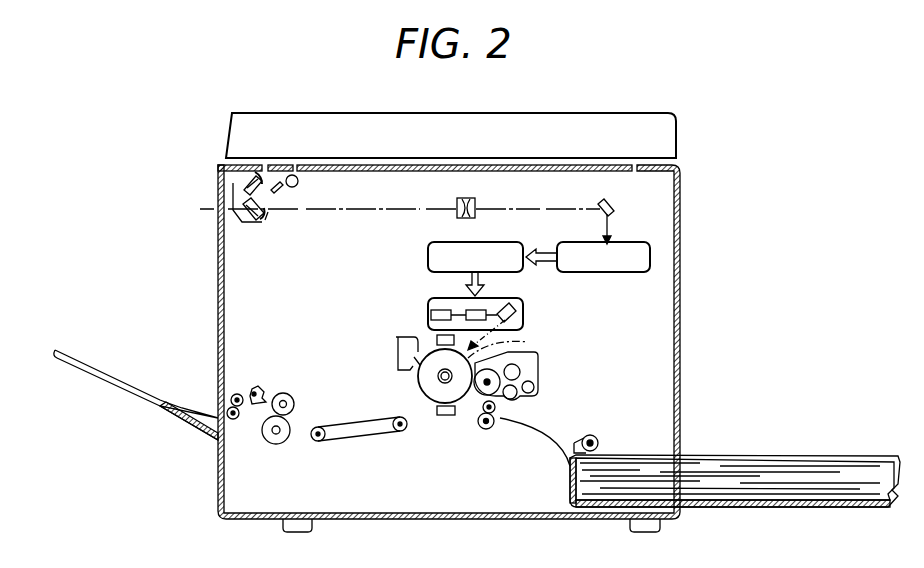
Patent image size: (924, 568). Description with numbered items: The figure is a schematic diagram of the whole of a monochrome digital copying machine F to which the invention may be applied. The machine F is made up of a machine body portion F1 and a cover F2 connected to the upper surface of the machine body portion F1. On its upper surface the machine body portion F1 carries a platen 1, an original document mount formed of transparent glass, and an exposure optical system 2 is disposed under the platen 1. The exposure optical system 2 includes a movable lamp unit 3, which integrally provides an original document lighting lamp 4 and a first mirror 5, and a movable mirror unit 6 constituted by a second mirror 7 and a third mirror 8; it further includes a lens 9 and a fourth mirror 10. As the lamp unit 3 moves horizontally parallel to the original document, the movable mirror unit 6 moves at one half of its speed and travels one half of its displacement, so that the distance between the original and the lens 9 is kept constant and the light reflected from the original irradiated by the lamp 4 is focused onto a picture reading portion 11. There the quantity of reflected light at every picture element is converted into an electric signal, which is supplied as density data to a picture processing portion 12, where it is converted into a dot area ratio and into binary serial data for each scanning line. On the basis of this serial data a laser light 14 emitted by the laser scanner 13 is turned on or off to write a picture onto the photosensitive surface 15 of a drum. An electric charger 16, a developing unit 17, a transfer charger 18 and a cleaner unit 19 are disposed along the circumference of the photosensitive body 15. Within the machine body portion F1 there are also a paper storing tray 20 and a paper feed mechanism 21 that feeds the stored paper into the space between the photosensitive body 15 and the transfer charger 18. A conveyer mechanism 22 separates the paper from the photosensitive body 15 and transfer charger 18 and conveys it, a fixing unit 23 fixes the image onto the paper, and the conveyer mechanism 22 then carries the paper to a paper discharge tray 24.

The monochrome digital copying machine F is at (698, 114).
The machine body portion F1 is at (682, 200).
The cover F2 is at (614, 112).
The platen 1 is at (388, 170).
The exposure optical system 2 is at (265, 228).
The lamp unit 3 is at (336, 216).
The original document lighting lamp 4 is at (295, 190).
The first mirror 5 is at (278, 196).
The movable mirror unit 6 is at (186, 173).
The second mirror 7 is at (232, 178).
The third mirror 8 is at (232, 209).
The lens 9 is at (476, 200).
The fourth mirror 10 is at (612, 202).
The picture reading portion 11 is at (610, 273).
The picture processing portion 12 is at (428, 257).
The laser scanner 13 is at (526, 308).
The laser light 14 is at (510, 345).
The photosensitive surface 15 is at (418, 382).
The electric charger 16 is at (438, 338).
The developing unit 17 is at (540, 370).
The transfer charger 18 is at (446, 415).
The cleaner unit 19 is at (396, 345).
The paper storing tray 20 is at (822, 456).
The paper feed mechanism 21 is at (494, 428).
The conveyer mechanism 22 is at (364, 430).
The fixing unit 23 is at (289, 442).
The paper discharge tray 24 is at (180, 424).